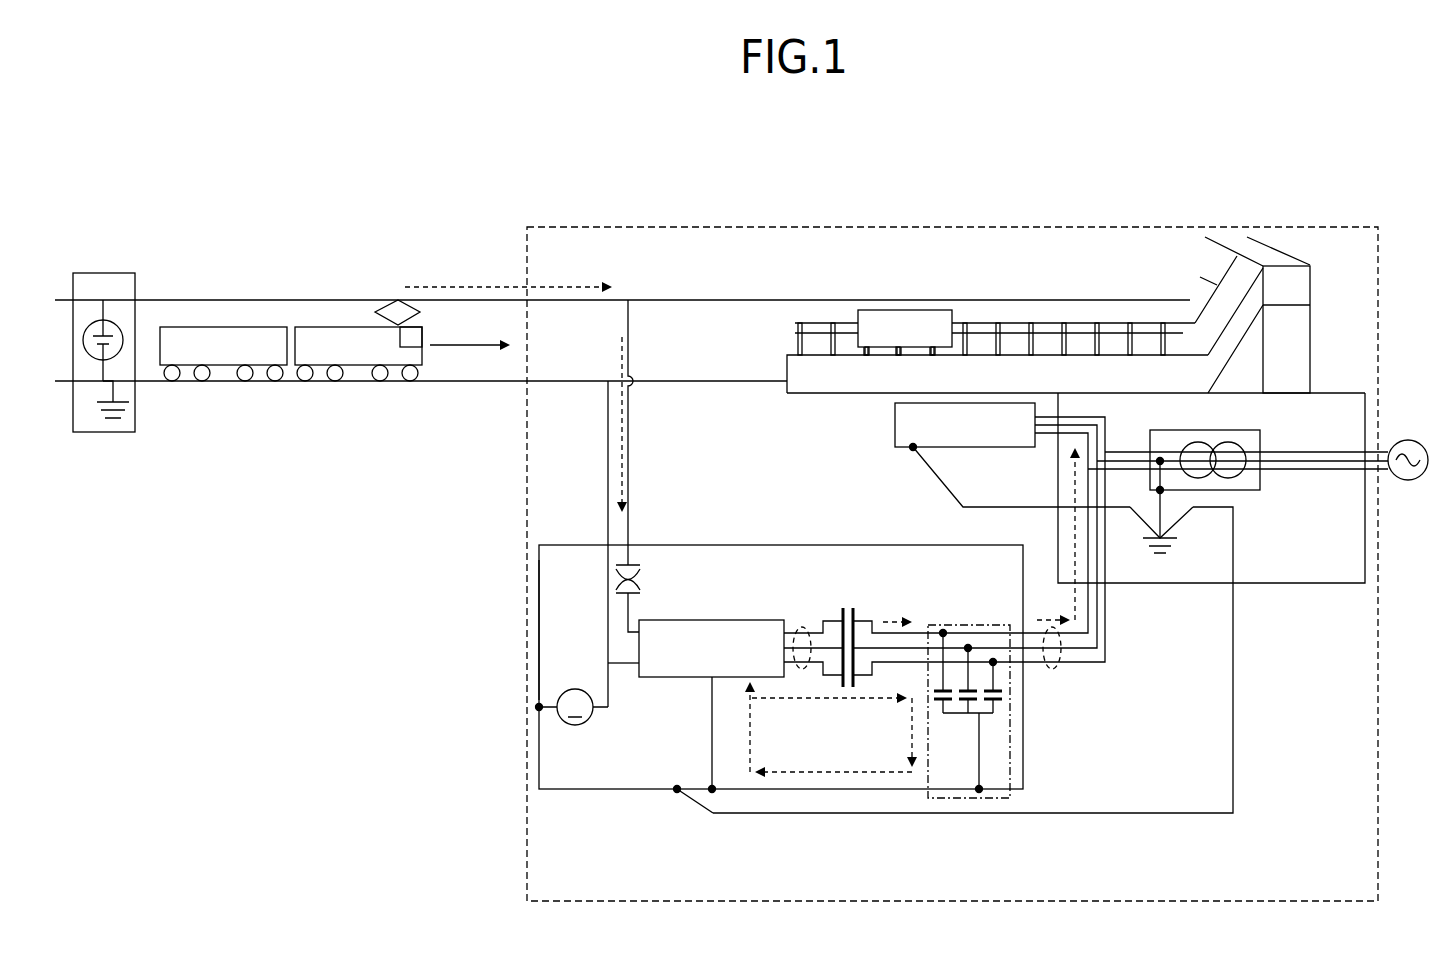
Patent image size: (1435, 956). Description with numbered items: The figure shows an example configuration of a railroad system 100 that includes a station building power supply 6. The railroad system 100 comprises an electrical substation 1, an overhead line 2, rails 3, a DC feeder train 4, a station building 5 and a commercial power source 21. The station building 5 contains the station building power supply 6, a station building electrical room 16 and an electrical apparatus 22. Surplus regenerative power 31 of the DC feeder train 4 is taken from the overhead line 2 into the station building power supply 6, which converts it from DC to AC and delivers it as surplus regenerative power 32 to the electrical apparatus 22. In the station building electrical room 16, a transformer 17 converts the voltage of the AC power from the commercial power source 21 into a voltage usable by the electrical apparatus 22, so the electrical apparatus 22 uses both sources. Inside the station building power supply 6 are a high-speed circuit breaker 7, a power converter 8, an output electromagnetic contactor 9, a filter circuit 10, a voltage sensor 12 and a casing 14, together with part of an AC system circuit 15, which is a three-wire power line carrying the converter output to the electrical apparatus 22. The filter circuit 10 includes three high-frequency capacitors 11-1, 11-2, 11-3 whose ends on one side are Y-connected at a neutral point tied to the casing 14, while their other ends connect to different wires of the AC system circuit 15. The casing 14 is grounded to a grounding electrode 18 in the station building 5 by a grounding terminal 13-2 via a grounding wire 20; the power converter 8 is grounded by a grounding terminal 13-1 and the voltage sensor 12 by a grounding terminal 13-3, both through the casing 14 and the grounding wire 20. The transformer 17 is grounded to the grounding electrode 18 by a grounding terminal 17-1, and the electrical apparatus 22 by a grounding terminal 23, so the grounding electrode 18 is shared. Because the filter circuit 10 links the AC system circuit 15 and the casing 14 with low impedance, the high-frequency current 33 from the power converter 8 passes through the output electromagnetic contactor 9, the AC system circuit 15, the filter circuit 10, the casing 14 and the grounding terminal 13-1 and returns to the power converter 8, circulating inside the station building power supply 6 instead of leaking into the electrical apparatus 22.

The railroad system 100 is at (652, 193).
The electrical substation 1 is at (103, 273).
The overhead line 2 is at (182, 300).
The rails 3 is at (486, 383).
The DC feeder train 4 is at (315, 327).
The station building 5 is at (1335, 227).
The station building power supply 6 is at (576, 533).
The high-speed circuit breaker 7 is at (633, 560).
The power converter 8 is at (732, 620).
The output electromagnetic contactor 9 is at (838, 618).
The filter circuit 10 is at (982, 754).
The high-frequency capacitor 11-1 is at (946, 702).
The high-frequency capacitor 11-2 is at (968, 702).
The high-frequency capacitor 11-3 is at (992, 702).
The voltage sensor 12 is at (577, 689).
The grounding terminal 13-1 is at (710, 786).
The grounding terminal 13-2 is at (675, 792).
The grounding terminal 13-3 is at (539, 707).
The casing 14 is at (539, 622).
The AC system circuit 15 is at (800, 670).
The station building electrical room 16 is at (1337, 393).
The transformer 17 is at (1237, 431).
The grounding terminal 17-1 is at (1163, 492).
The grounding electrode 18 is at (1160, 560).
The grounding wire 20 is at (1234, 610).
The commercial power source 21 is at (1410, 440).
The electrical apparatus 22 is at (895, 425).
The grounding terminal 23 is at (913, 452).
The surplus regenerative power 31 is at (462, 287).
The surplus regenerative power 32 is at (1073, 462).
The high-frequency current 33 is at (872, 702).